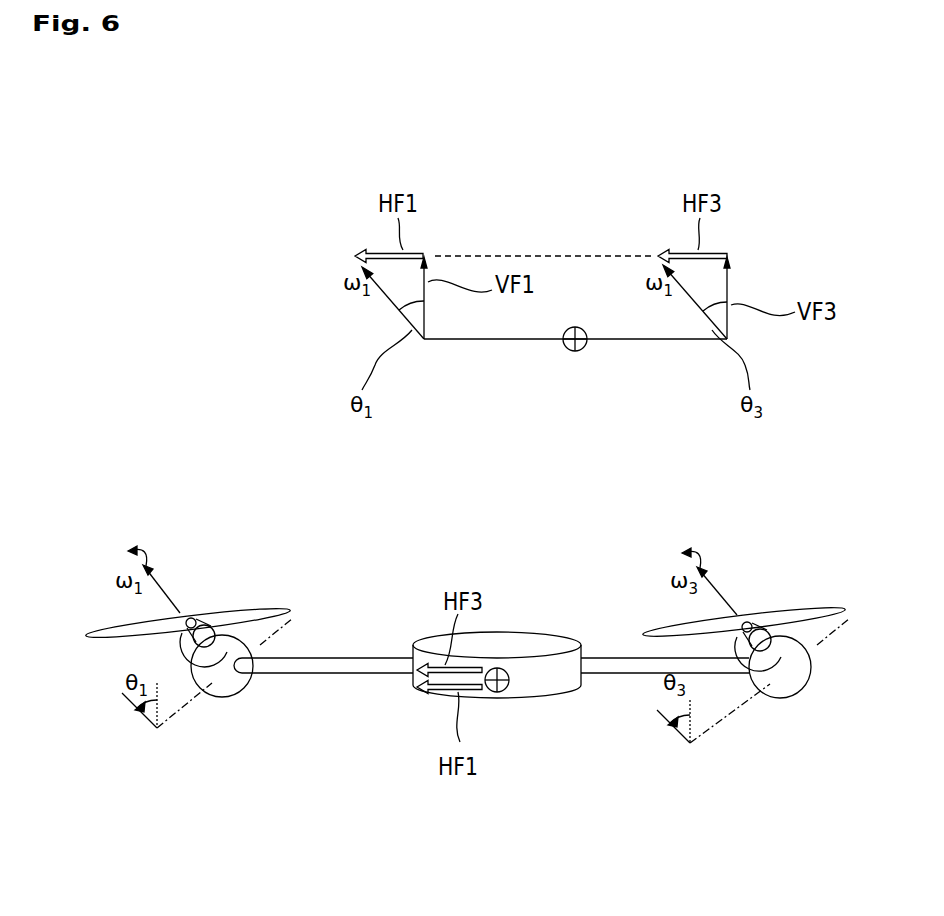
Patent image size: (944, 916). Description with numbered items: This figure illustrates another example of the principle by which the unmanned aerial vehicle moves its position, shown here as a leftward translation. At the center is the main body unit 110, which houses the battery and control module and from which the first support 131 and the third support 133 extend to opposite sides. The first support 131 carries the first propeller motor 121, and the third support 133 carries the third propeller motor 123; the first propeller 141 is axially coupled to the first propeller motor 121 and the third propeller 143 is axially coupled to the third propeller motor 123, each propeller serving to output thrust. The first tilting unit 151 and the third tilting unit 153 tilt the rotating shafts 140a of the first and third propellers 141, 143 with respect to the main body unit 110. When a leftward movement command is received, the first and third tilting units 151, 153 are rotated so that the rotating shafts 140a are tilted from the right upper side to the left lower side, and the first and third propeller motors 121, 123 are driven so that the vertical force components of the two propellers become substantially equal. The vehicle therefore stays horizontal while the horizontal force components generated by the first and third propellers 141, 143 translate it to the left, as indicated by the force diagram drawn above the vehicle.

The main body unit 110 is at (573, 352).
The first support 131 is at (467, 342).
The third support 133 is at (670, 342).
The first propeller motor 121 is at (220, 628).
The third propeller motor 123 is at (775, 625).
The first propeller 141 is at (262, 610).
The third propeller 143 is at (820, 615).
The first tilting unit 151 is at (246, 684).
The third tilting unit 153 is at (790, 680).
The rotating shaft 140a is at (187, 637).